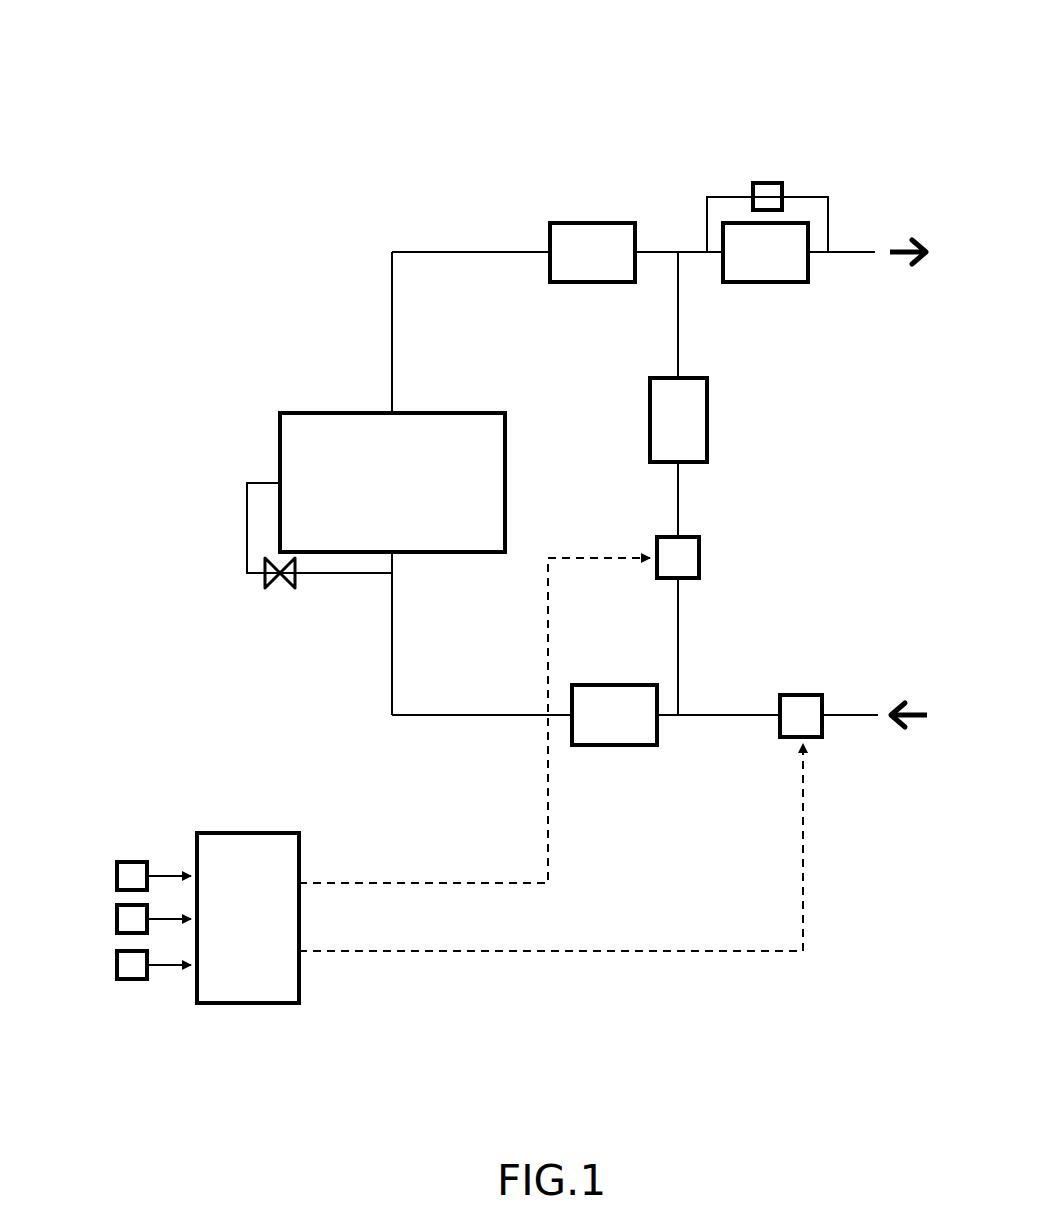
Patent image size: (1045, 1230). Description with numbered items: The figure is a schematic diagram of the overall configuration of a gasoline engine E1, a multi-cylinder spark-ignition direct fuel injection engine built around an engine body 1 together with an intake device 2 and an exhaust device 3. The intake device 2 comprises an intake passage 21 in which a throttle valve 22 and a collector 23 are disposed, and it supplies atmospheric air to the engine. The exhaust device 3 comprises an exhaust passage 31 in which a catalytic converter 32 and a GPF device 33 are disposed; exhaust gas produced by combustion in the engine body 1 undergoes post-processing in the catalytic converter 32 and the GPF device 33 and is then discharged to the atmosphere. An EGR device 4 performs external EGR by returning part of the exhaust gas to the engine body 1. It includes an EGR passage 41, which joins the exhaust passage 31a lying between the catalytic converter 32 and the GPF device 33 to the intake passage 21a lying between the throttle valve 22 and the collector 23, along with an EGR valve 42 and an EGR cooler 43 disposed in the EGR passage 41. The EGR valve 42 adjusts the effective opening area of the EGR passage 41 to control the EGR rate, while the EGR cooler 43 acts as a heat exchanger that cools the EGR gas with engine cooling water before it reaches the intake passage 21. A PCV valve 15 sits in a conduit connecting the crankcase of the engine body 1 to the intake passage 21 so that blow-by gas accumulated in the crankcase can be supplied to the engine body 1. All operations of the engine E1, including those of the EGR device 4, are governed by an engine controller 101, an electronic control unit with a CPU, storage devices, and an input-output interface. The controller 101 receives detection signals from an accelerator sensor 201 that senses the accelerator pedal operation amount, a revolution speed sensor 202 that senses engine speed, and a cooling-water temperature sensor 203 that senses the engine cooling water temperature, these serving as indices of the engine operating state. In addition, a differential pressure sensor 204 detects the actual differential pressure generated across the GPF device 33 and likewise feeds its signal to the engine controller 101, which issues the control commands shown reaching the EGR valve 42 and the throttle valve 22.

The gasoline engine E1 is at (712, 103).
The engine body 1 is at (458, 411).
The PCV valve 15 is at (268, 590).
The intake device 2 is at (748, 668).
The intake passage 21 is at (447, 718).
The intake passage 21a is at (714, 718).
The throttle valve 22 is at (808, 694).
The collector 23 is at (593, 748).
The exhaust device 3 is at (570, 173).
The exhaust passage 31 is at (458, 250).
The exhaust passage 31a is at (664, 250).
The catalytic converter 32 is at (614, 222).
The GPF device 33 is at (745, 285).
The differential pressure sensor 204 is at (773, 181).
The EGR device 4 is at (773, 455).
The EGR passage 41 is at (680, 495).
The EGR valve 42 is at (700, 551).
The EGR cooler 43 is at (708, 407).
The engine controller 101 is at (230, 1005).
The accelerator sensor 201 is at (116, 877).
The revolution speed sensor 202 is at (116, 920).
The cooling-water temperature sensor 203 is at (116, 966).